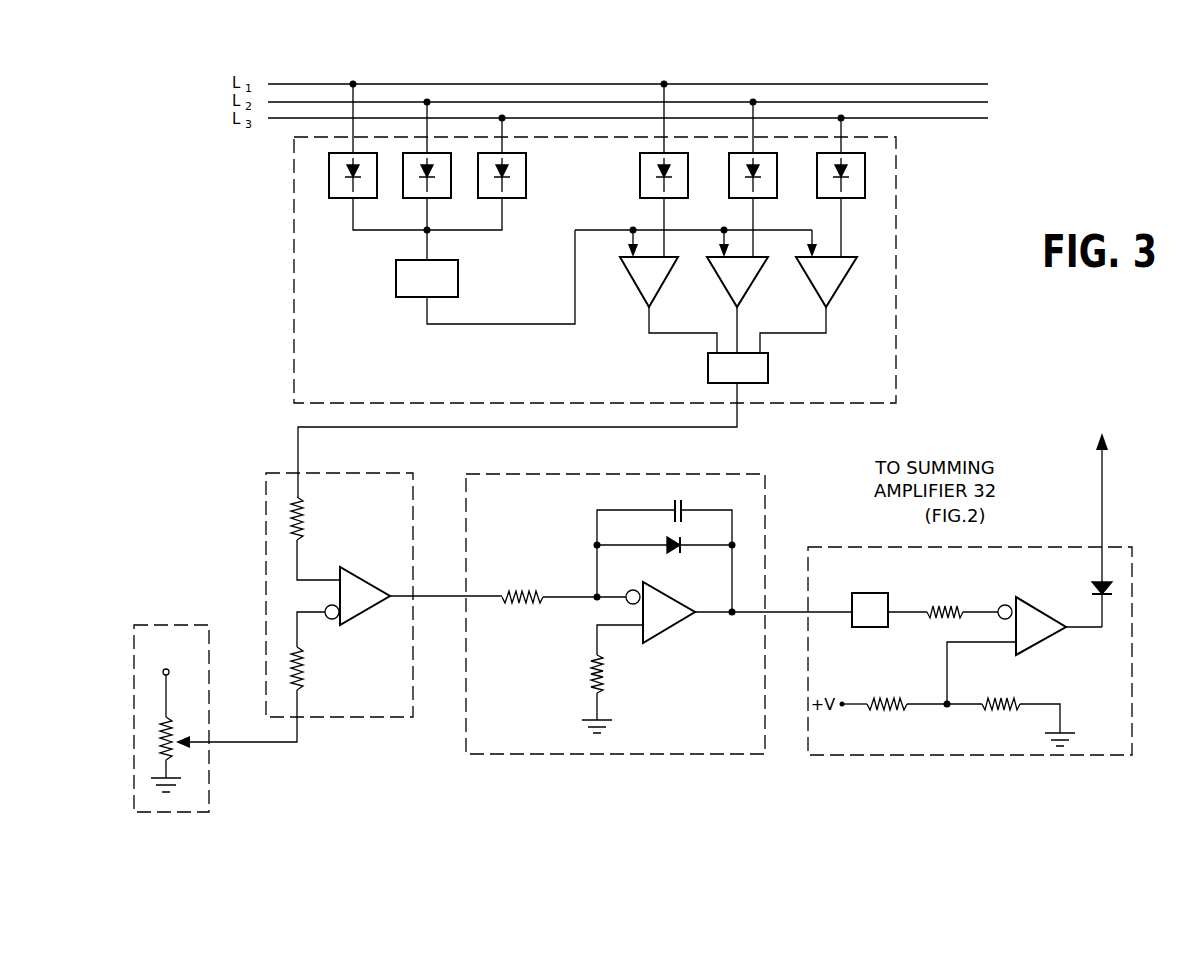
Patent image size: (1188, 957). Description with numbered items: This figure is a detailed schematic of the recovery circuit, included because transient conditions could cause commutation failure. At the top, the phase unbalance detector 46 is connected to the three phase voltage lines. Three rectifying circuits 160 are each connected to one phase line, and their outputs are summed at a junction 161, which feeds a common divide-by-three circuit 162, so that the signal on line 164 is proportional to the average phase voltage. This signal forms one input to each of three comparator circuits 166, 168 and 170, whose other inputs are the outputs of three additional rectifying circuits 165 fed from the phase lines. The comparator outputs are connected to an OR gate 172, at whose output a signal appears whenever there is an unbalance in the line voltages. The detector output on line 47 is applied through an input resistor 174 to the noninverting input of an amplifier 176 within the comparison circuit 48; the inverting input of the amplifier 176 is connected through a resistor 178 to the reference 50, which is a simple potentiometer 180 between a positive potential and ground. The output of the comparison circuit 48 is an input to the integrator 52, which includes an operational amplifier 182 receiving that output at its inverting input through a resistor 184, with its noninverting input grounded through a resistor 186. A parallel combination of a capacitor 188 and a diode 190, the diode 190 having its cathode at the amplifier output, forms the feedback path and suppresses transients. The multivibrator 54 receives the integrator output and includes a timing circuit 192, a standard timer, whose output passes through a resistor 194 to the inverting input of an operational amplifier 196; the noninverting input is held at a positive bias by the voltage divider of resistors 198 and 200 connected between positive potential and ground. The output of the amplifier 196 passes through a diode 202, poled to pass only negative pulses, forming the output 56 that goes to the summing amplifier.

The phase unbalance detector 46 is at (905, 296).
The line 47 is at (572, 427).
The comparison circuit 48 is at (266, 492).
The reference 50 is at (172, 625).
The integrator 52 is at (768, 473).
The multivibrator 54 is at (1132, 556).
The output 56 is at (1102, 487).
The rectifying circuits 160 is at (376, 199).
The junction 161 is at (425, 231).
The divide-by-three circuit 162 is at (396, 279).
The line 164 is at (557, 325).
The additional rectifying circuits 165 is at (688, 195).
The comparator circuit 166 is at (629, 276).
The comparator circuit 168 is at (724, 287).
The comparator circuit 170 is at (810, 287).
The OR gate 172 is at (769, 368).
The input resistor 174 is at (318, 532).
The amplifier 176 is at (368, 583).
The resistor 178 is at (311, 681).
The potentiometer 180 is at (158, 734).
The operational amplifier 182 is at (675, 625).
The resistor 184 is at (540, 585).
The resistor 186 is at (610, 675).
The capacitor 188 is at (686, 497).
The diode 190 is at (675, 553).
The timing circuit 192 is at (885, 593).
The resistor 194 is at (963, 599).
The operational amplifier 196 is at (1048, 640).
The resistor 198 is at (884, 692).
The resistor 200 is at (1010, 715).
The diode 202 is at (1095, 583).